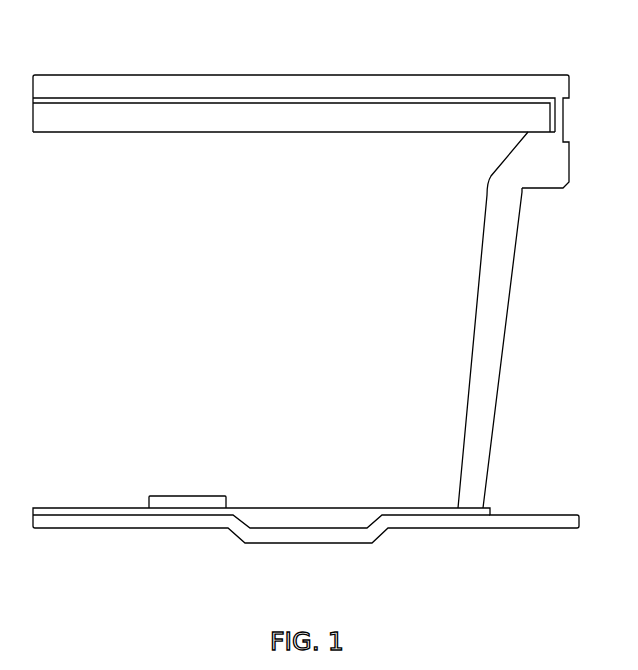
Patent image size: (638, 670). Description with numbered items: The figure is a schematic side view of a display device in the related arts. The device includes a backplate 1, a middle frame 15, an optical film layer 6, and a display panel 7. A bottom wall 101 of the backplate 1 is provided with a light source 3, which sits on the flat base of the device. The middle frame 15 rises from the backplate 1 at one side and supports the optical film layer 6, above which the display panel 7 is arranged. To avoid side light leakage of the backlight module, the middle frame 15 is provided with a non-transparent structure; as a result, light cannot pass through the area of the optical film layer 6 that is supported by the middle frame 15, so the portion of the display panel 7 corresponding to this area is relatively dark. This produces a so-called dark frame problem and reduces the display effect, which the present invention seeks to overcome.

The backplate 1 is at (200, 578).
The bottom wall 101 is at (184, 520).
The light source 3 is at (178, 498).
The optical film layer 6 is at (62, 115).
The display panel 7 is at (182, 84).
The middle frame 15 is at (492, 337).